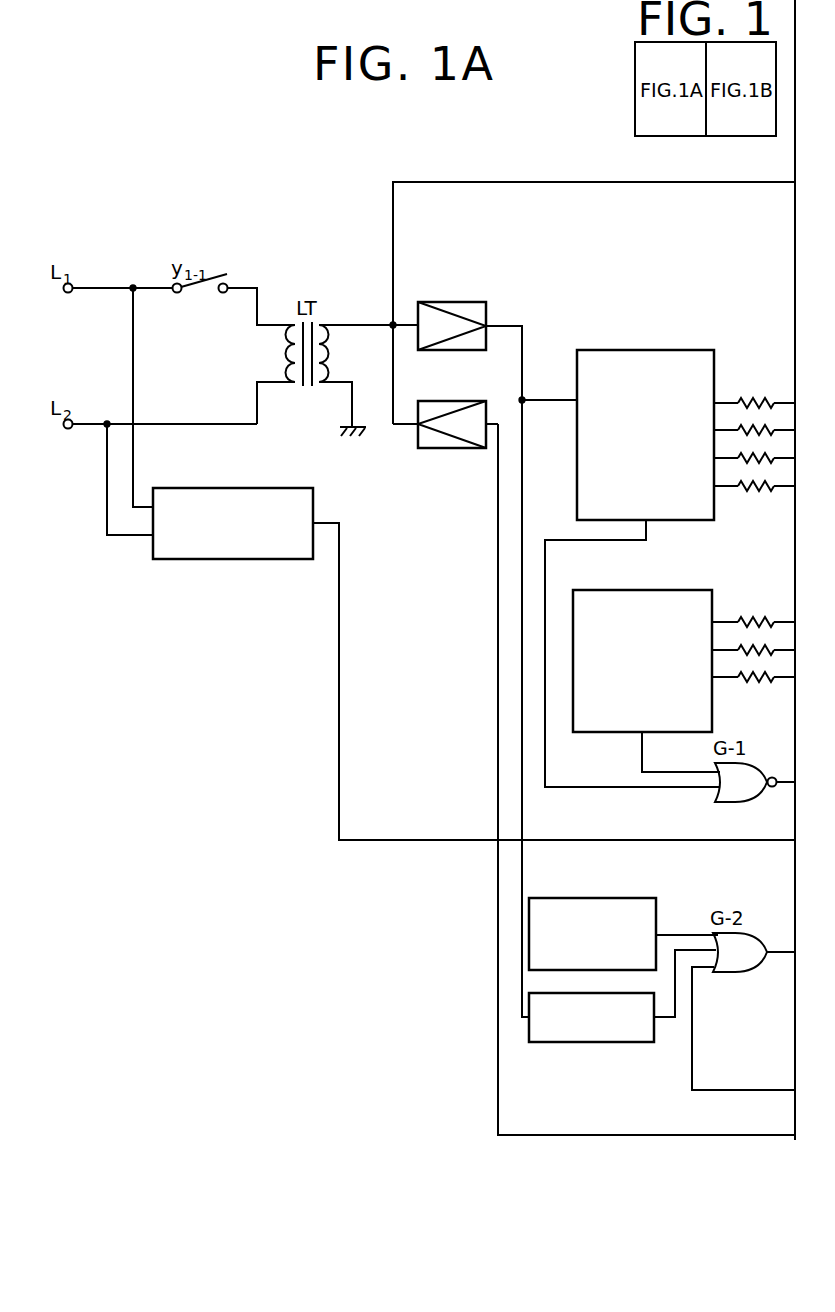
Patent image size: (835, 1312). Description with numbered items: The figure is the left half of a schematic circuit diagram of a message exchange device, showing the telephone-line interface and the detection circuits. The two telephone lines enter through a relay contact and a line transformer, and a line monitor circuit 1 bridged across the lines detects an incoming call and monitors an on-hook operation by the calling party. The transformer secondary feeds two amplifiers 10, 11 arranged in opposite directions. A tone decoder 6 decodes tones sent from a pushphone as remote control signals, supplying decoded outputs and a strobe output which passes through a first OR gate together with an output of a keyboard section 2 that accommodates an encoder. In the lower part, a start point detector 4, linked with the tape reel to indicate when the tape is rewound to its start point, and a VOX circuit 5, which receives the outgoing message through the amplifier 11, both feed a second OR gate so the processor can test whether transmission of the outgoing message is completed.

The line monitor circuit 1 is at (251, 488).
The keyboard section 2 is at (649, 590).
The start point detector 4 is at (611, 898).
The VOX circuit 5 is at (613, 1042).
The tone decoder 6 is at (638, 350).
The amplifier 10 is at (461, 401).
The amplifier 11 is at (469, 302).